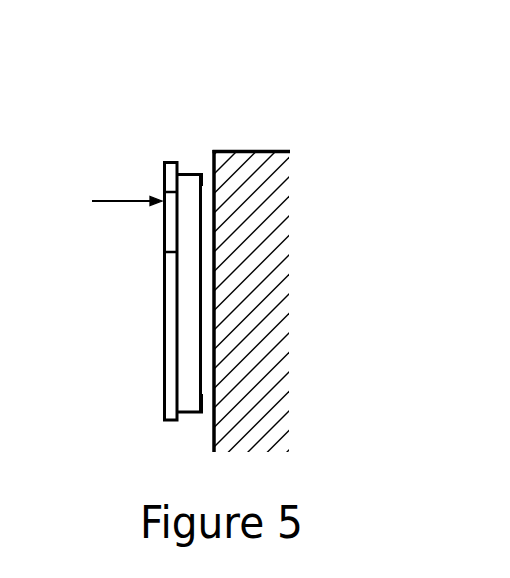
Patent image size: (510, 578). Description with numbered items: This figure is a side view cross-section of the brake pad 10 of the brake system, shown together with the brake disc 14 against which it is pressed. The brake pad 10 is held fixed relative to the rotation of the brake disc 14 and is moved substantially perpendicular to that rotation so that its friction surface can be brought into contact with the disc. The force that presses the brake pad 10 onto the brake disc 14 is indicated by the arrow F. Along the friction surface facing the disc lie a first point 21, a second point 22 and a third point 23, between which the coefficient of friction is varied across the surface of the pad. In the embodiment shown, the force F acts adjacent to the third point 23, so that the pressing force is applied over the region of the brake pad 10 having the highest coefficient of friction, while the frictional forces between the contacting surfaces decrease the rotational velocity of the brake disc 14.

The brake pad 10 is at (157, 114).
The brake disc 14 is at (220, 157).
The first point 21 is at (199, 393).
The second point 22 is at (199, 288).
The third point 23 is at (199, 187).
The force F is at (117, 202).